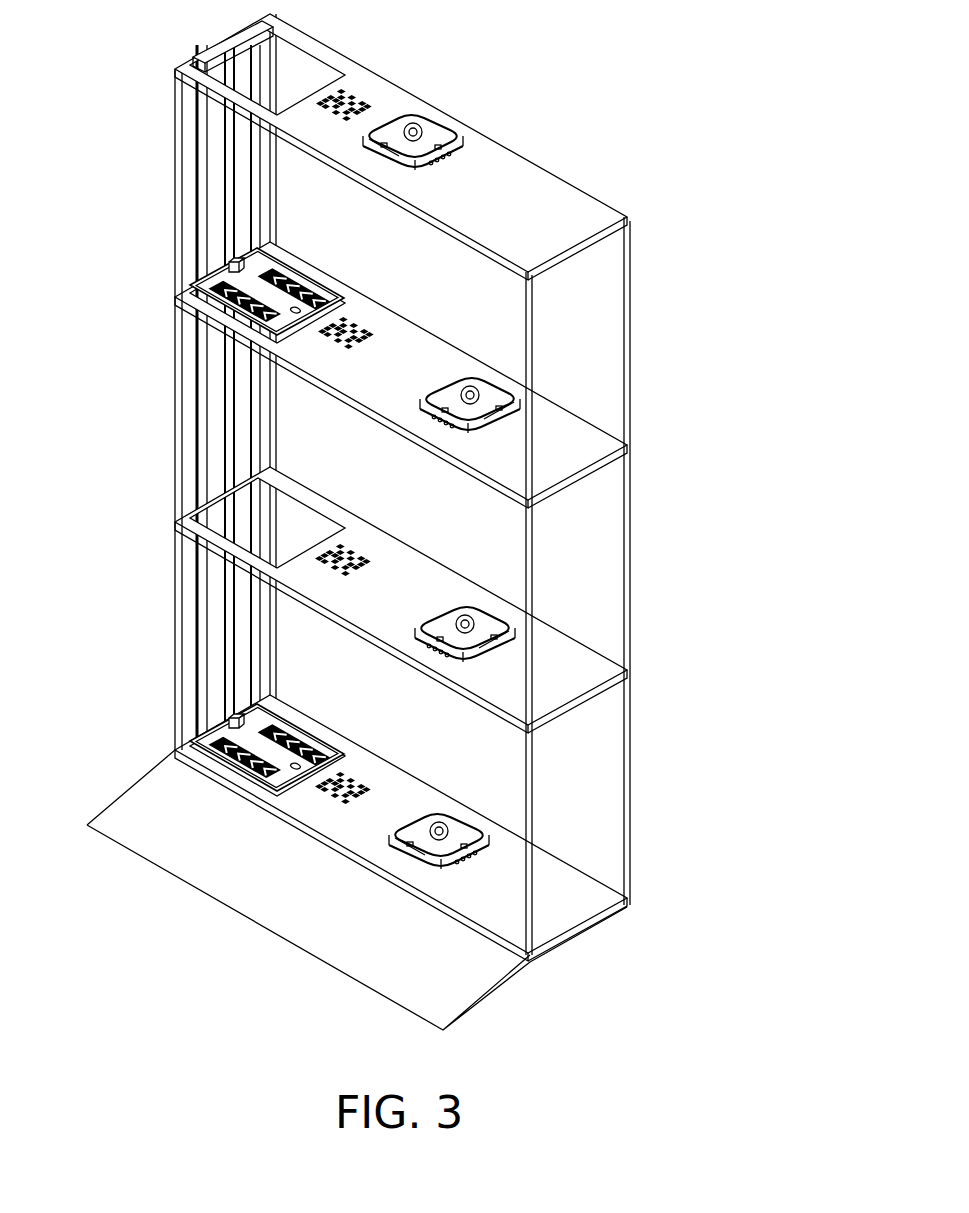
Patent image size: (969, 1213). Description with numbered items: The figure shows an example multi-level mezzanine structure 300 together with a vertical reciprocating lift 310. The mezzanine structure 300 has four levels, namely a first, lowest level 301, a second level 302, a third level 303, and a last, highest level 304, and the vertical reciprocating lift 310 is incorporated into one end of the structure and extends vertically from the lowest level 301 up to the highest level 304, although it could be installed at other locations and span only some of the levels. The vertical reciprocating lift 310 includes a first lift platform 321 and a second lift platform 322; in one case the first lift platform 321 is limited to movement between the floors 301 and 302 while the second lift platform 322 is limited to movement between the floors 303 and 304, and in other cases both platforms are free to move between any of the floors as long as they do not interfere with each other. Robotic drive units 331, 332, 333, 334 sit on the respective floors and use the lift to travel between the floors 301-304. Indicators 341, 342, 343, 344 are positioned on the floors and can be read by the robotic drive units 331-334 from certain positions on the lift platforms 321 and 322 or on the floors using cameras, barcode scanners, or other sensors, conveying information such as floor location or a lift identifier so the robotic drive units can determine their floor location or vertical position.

The multi-level mezzanine structure 300 is at (445, 522).
The first, lowest level 301 is at (587, 908).
The second level 302 is at (587, 682).
The third level 303 is at (587, 456).
The last, highest level 304 is at (587, 230).
The vertical reciprocating lift 310 is at (186, 428).
The first lift platform 321 is at (305, 722).
The second lift platform 322 is at (305, 268).
The robotic drive unit 331 is at (462, 814).
The robotic drive unit 332 is at (478, 618).
The robotic drive unit 333 is at (478, 388).
The robotic drive unit 334 is at (436, 128).
The indicator 341 is at (346, 780).
The indicator 342 is at (346, 545).
The indicator 343 is at (346, 320).
The indicator 344 is at (346, 92).